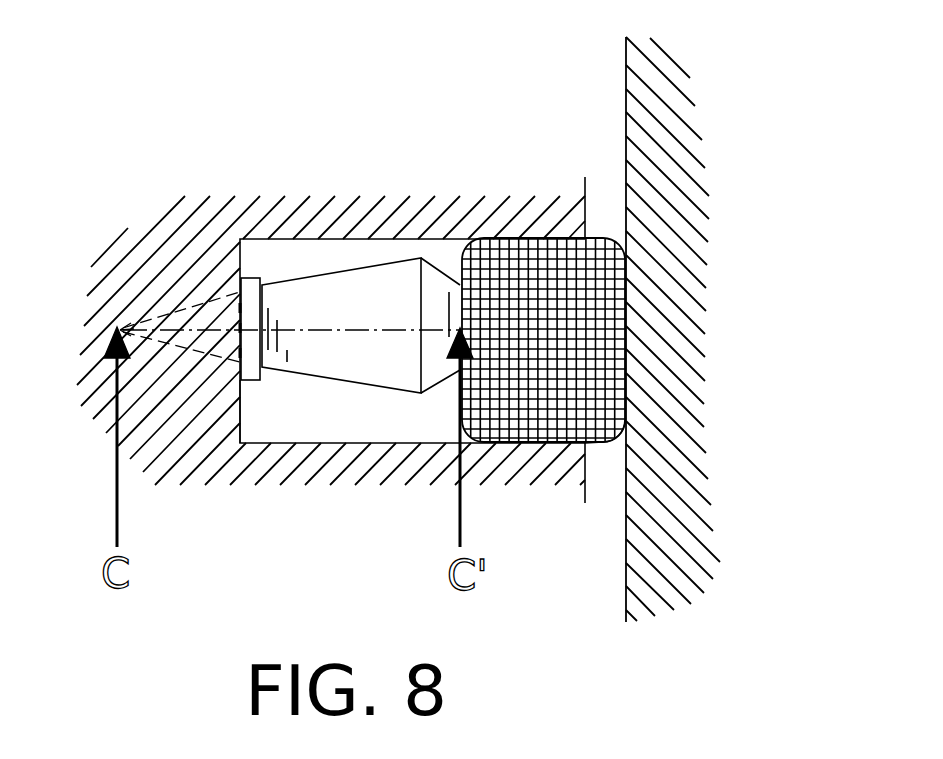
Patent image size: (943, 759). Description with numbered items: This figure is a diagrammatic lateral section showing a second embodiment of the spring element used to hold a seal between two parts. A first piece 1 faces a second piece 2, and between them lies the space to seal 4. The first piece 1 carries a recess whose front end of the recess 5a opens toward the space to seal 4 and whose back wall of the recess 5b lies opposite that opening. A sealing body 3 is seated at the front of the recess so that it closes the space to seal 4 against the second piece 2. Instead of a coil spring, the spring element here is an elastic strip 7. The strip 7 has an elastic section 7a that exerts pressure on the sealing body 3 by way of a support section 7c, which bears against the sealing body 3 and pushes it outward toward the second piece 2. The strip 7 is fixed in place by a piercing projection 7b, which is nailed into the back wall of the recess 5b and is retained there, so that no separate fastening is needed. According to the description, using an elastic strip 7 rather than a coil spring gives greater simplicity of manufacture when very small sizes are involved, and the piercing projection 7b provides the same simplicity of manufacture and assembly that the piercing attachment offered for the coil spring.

The first piece 1 is at (175, 428).
The second piece 2 is at (664, 136).
The sealing body 3 is at (528, 292).
The space to seal 4 is at (606, 213).
The front end of the recess 5a is at (585, 443).
The back wall of the recess 5b is at (240, 408).
The strip 7 is at (340, 270).
The elastic section 7a is at (305, 303).
The piercing projection 7b is at (190, 319).
The support section 7c is at (438, 330).